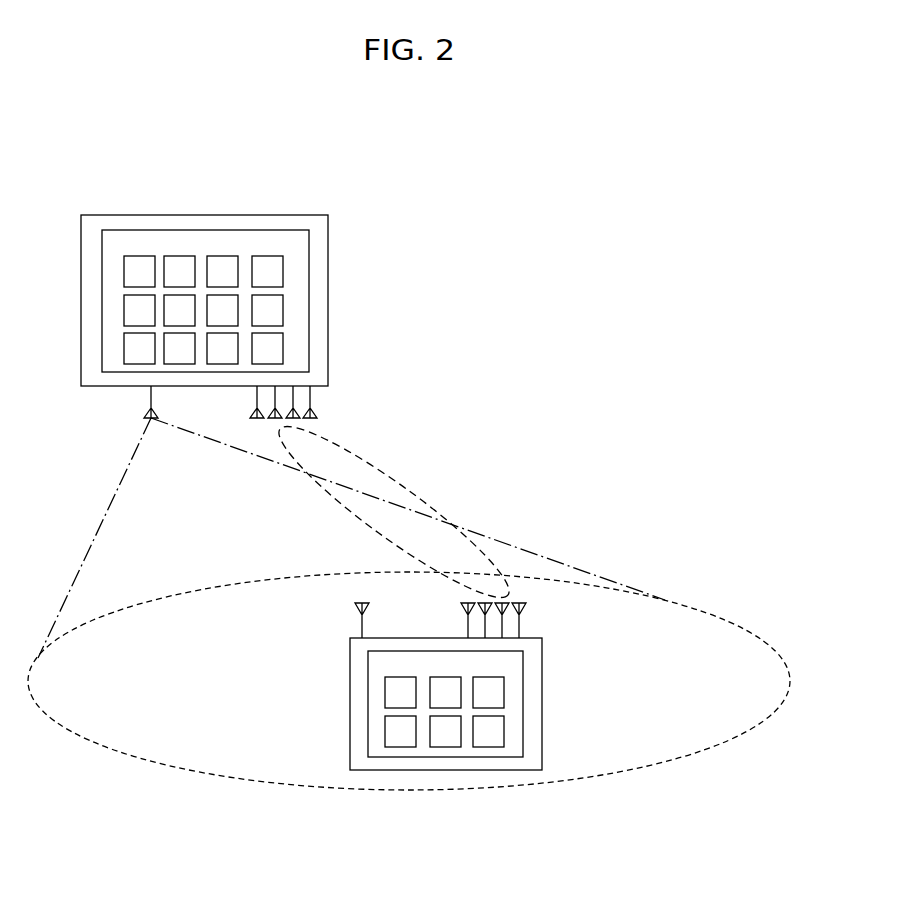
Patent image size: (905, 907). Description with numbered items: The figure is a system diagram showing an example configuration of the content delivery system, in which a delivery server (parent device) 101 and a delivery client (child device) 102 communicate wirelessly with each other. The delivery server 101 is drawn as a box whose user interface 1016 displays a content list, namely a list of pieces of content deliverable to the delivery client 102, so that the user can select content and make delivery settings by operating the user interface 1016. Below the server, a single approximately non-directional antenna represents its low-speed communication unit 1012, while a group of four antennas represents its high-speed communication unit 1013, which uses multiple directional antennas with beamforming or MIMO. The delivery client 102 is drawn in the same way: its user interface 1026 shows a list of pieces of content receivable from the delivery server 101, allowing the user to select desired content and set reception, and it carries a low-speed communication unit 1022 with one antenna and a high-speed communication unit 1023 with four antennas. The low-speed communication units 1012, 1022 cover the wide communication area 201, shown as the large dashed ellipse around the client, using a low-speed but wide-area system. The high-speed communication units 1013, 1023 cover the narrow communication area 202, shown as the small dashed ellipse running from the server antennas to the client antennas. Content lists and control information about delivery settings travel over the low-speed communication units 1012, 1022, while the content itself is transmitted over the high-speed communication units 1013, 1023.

The delivery server 101 is at (101, 215).
The user interface 1016 is at (160, 230).
The low-speed communication unit 1012 is at (143, 414).
The high-speed communication unit 1013 is at (319, 416).
The delivery client 102 is at (542, 660).
The user interface 1026 is at (523, 702).
The low-speed communication unit 1022 is at (355, 609).
The high-speed communication unit 1023 is at (527, 609).
The communication area 201 is at (192, 775).
The communication area 202 is at (397, 485).